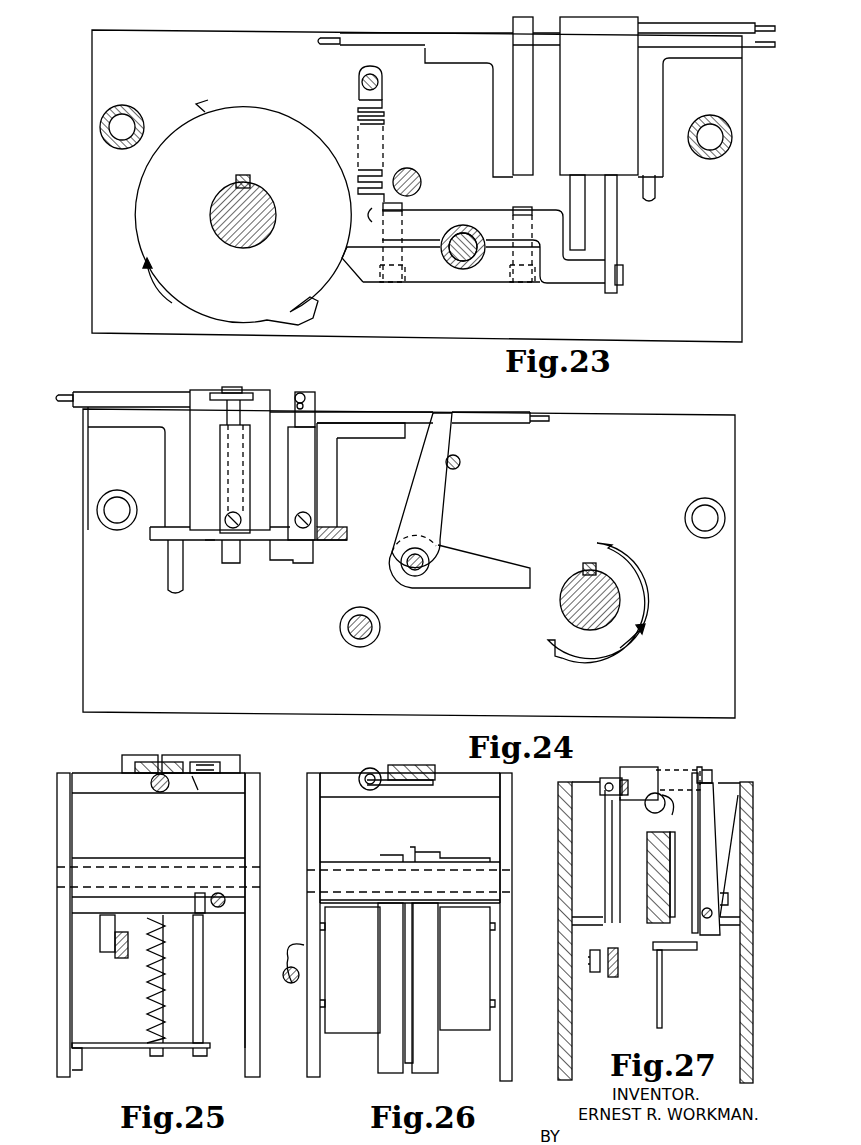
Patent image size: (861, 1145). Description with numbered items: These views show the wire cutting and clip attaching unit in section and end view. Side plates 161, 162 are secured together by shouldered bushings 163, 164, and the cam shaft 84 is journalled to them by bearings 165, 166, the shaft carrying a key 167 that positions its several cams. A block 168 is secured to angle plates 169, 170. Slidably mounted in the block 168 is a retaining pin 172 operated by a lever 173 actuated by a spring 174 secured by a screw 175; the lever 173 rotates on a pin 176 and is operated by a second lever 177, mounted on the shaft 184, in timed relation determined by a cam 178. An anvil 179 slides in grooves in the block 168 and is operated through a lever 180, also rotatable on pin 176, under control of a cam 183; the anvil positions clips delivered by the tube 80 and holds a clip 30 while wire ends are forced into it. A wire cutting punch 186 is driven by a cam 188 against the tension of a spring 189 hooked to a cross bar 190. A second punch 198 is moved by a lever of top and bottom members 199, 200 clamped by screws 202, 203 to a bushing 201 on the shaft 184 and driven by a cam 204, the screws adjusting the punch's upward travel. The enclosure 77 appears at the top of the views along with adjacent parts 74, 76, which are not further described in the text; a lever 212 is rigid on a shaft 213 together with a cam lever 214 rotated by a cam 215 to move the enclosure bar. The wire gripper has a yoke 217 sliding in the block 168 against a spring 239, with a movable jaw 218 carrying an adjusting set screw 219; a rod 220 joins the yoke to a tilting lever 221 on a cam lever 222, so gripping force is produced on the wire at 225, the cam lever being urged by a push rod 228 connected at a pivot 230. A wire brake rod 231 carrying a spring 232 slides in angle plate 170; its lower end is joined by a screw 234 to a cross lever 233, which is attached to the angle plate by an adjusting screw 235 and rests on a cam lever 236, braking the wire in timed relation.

In FIG. 25, the clip 30 is at (210, 762).
In FIG. 23, the terminal tab 74 is at (330, 46).
In FIG. 24, the terminal tab 74 is at (64, 404).
In FIG. 23, the terminal strip 76 is at (757, 48).
In FIG. 25, the terminal strip 76 is at (158, 793).
In FIG. 23, the enclosure 77 is at (404, 34).
In FIG. 24, the enclosure 77 is at (136, 392).
In FIG. 25, the enclosure 77 is at (178, 764).
In FIG. 26, the enclosure 77 is at (422, 766).
In FIG. 25, the tube 80 is at (197, 790).
In FIG. 23, the cam shaft 84 is at (262, 244).
In FIG. 24, the cam shaft 84 is at (588, 622).
In FIG. 26, the cam shaft 84 is at (298, 982).
In FIG. 23, the side plate 161 is at (742, 313).
In FIG. 25, the side plate 161 is at (254, 795).
In FIG. 26, the side plate 161 is at (318, 820).
In FIG. 27, the side plate 161 is at (753, 830).
In FIG. 24, the side plate 162 is at (735, 665).
In FIG. 25, the side plate 162 is at (60, 820).
In FIG. 26, the side plate 162 is at (508, 800).
In FIG. 27, the side plate 162 is at (560, 832).
In FIG. 23, the shouldered bushing 163 is at (136, 108).
In FIG. 24, the shouldered bushing 163 is at (706, 540).
In FIG. 26, the shouldered bushing 163 is at (362, 862).
In FIG. 23, the shouldered bushing 164 is at (709, 159).
In FIG. 24, the shouldered bushing 164 is at (118, 532).
In FIG. 25, the shouldered bushing 164 is at (106, 860).
In FIG. 26, the bearing 165 is at (326, 943).
In FIG. 26, the bearing 166 is at (490, 943).
In FIG. 23, the key 167 is at (253, 179).
In FIG. 24, the key 167 is at (588, 562).
In FIG. 23, the block 168 is at (608, 135).
In FIG. 24, the block 168 is at (198, 394).
In FIG. 25, the block 168 is at (240, 762).
In FIG. 27, the block 168 is at (644, 768).
In FIG. 23, the angle plate 169 is at (495, 121).
In FIG. 24, the angle plate 169 is at (372, 430).
In FIG. 26, the angle plate 169 is at (490, 818).
In FIG. 27, the angle plate 169 is at (740, 852).
In FIG. 23, the angle plate 170 is at (660, 87).
In FIG. 24, the angle plate 170 is at (166, 466).
In FIG. 25, the angle plate 170 is at (240, 846).
In FIG. 24, the retaining pin 172 is at (304, 392).
In FIG. 27, the retaining pin 172 is at (713, 778).
In FIG. 24, the lever 173 is at (312, 398).
In FIG. 27, the lever 173 is at (684, 950).
In FIG. 24, the spring 174 is at (226, 482).
In FIG. 27, the spring 174 is at (720, 876).
In FIG. 24, the screw 175 is at (214, 541).
In FIG. 27, the screw 175 is at (730, 897).
In FIG. 24, the pin 176 is at (348, 535).
In FIG. 27, the pin 176 is at (710, 920).
In FIG. 27, the second lever 177 is at (662, 1012).
In FIG. 26, the cam 178 is at (400, 948).
In FIG. 24, the anvil 179 is at (248, 393).
In FIG. 24, the lever 180 is at (234, 387).
In FIG. 26, the cam 183 is at (415, 978).
In FIG. 23, the shaft 184 is at (447, 258).
In FIG. 24, the shaft 184 is at (365, 645).
In FIG. 23, the wire cutting punch 186 is at (597, 180).
In FIG. 26, the cam 188 is at (386, 980).
In FIG. 23, the spring 189 is at (385, 136).
In FIG. 23, the cross bar 190 is at (384, 80).
In FIG. 24, the cross bar 190 is at (460, 466).
In FIG. 23, the second punch 198 is at (611, 294).
In FIG. 23, the lever top member 199 is at (583, 280).
In FIG. 23, the lever bottom member 200 is at (468, 286).
In FIG. 23, the bushing 201 is at (466, 226).
In FIG. 23, the screw 202 is at (393, 285).
In FIG. 23, the screw 203 is at (522, 285).
In FIG. 23, the cam 204 is at (178, 288).
In FIG. 24, the lever 212 is at (443, 514).
In FIG. 24, the shaft 213 is at (408, 566).
In FIG. 24, the cam lever 214 is at (482, 578).
In FIG. 24, the cam 215 is at (614, 652).
In FIG. 27, the yoke 217 is at (630, 910).
In FIG. 27, the movable jaw 218 is at (600, 782).
In FIG. 27, the adjusting set screw 219 is at (622, 778).
In FIG. 27, the rod 220 is at (605, 858).
In FIG. 27, the tilting lever 221 is at (597, 974).
In FIG. 25, the cam lever 222 is at (122, 960).
In FIG. 27, the cam lever 222 is at (620, 978).
In FIG. 27, the wire gripping point 225 is at (670, 812).
In FIG. 25, the push rod 228 is at (100, 935).
In FIG. 25, the pivot 230 is at (148, 920).
In FIG. 23, the wire brake rod 231 is at (658, 198).
In FIG. 24, the wire brake rod 231 is at (170, 582).
In FIG. 25, the wire brake rod 231 is at (166, 962).
In FIG. 25, the spring 232 is at (148, 995).
In FIG. 25, the cross lever 233 is at (128, 1040).
In FIG. 25, the screw 234 is at (160, 1054).
In FIG. 25, the adjusting screw 235 is at (204, 982).
In FIG. 25, the cam lever 236 is at (84, 1062).
In FIG. 27, the spring 239 is at (712, 858).